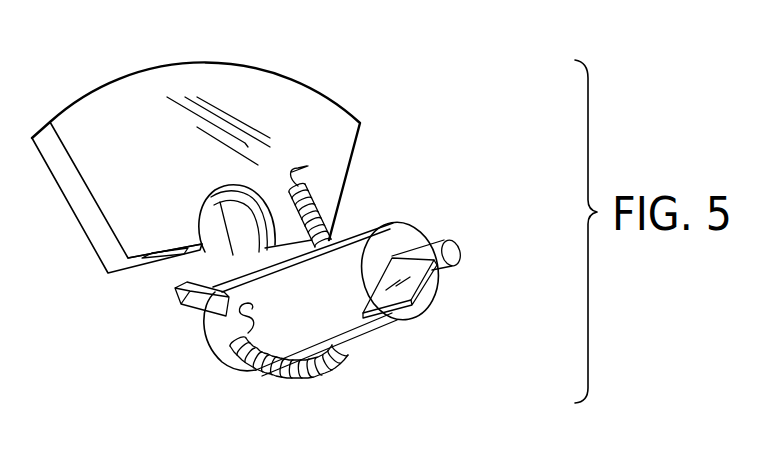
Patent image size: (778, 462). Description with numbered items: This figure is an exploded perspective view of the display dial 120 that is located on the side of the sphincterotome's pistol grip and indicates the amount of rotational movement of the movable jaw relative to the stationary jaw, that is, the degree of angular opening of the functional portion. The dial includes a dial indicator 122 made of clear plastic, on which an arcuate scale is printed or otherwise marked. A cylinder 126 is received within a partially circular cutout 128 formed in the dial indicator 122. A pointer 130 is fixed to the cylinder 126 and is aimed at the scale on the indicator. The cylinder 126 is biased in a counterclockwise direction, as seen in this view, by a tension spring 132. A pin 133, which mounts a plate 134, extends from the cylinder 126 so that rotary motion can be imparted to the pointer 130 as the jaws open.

The display dial 120 is at (423, 65).
The dial indicator 122 is at (115, 103).
The cylinder 126 is at (323, 308).
The partially circular cutout 128 is at (246, 187).
The pointer 130 is at (196, 298).
The tension spring 132 is at (328, 370).
The pin 133 is at (457, 242).
The plate 134 is at (428, 294).